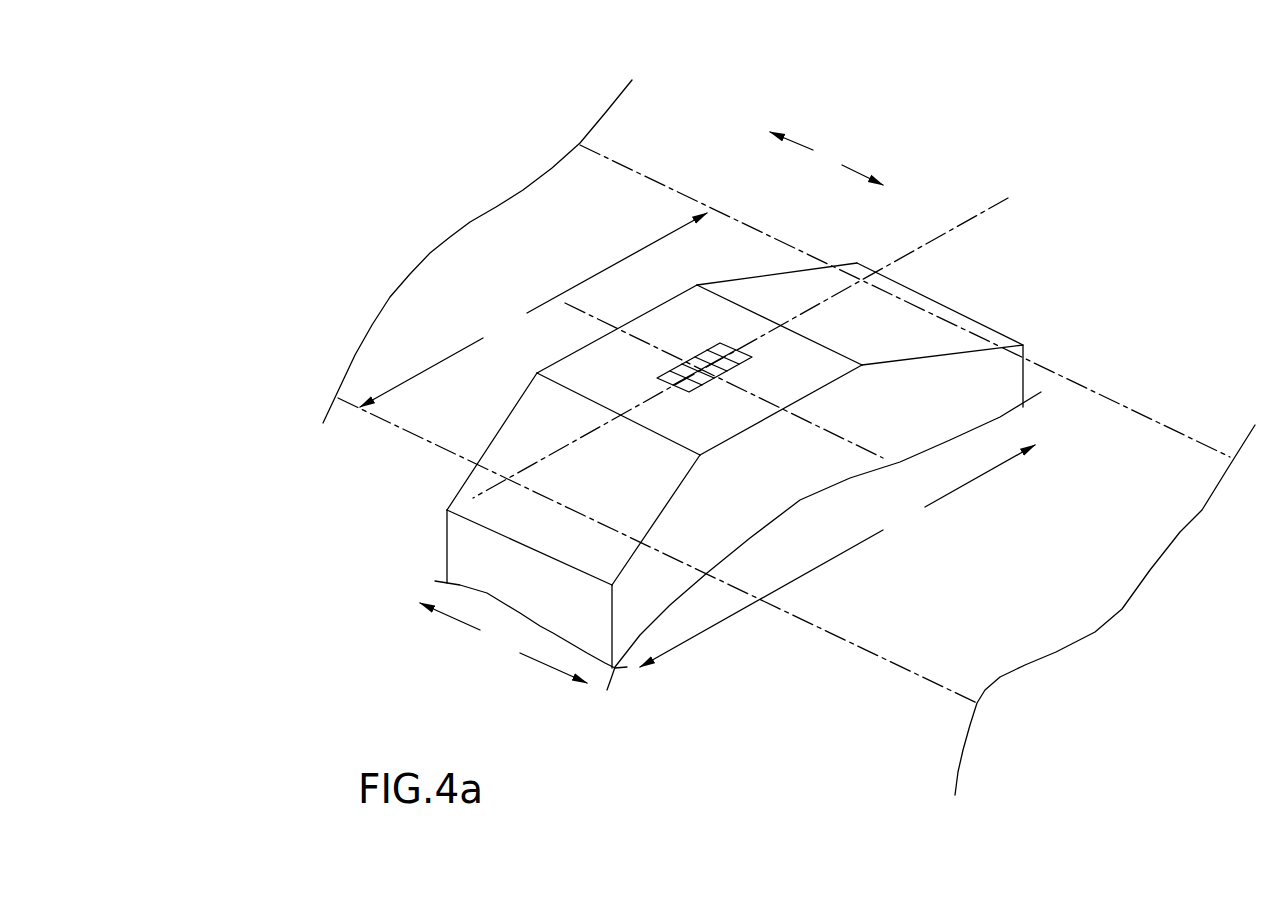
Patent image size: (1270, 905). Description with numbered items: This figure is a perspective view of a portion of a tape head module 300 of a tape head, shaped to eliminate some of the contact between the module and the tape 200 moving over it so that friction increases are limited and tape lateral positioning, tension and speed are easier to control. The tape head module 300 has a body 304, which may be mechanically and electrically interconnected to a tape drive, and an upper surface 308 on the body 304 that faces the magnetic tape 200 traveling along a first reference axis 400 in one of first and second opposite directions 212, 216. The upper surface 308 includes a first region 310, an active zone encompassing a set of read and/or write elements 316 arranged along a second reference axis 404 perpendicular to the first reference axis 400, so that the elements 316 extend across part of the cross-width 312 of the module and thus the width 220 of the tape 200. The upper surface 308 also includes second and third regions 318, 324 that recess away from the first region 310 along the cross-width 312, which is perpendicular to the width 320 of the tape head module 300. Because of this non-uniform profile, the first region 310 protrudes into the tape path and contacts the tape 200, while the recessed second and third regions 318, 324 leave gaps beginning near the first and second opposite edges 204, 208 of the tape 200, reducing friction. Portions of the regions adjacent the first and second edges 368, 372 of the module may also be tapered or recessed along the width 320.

The tape 200 is at (522, 190).
The first edge of the tape 204 is at (392, 425).
The second edge of the tape 208 is at (612, 160).
The first direction 212 is at (800, 142).
The second direction 216 is at (862, 167).
The width of the tape 220 is at (533, 310).
The tape head module 300 is at (992, 103).
The body 304 is at (453, 543).
The upper surface 308 is at (770, 283).
The first region 310 is at (810, 378).
The cross-width of the tape head module 312 is at (837, 556).
The elements 316 is at (707, 348).
The second region 318 is at (645, 500).
The width of the tape head module 320 is at (503, 643).
The third region 324 is at (937, 308).
The first edge of the tape head module 368 is at (577, 347).
The second edge of the tape head module 372 is at (737, 438).
The first reference axis 400 is at (590, 315).
The second reference axis 404 is at (985, 210).